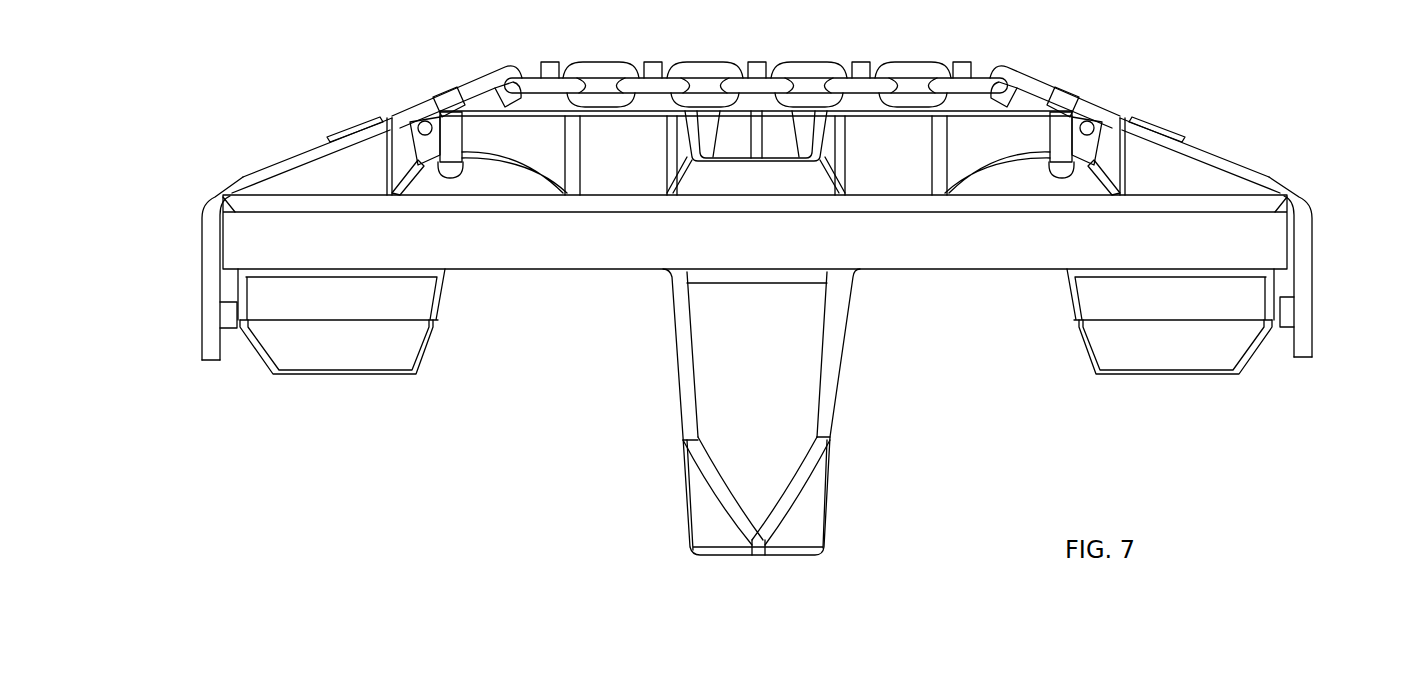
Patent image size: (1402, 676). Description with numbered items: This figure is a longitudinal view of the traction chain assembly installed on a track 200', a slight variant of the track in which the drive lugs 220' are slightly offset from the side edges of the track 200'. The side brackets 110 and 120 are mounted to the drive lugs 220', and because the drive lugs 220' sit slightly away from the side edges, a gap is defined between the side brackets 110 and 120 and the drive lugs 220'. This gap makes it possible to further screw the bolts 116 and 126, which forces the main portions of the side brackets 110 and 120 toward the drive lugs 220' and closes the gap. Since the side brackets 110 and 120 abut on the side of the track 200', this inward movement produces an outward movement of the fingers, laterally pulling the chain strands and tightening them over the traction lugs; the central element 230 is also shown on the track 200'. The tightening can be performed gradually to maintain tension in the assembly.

The track 200' is at (755, 339).
The side bracket 120 is at (208, 262).
The side bracket 110 is at (1308, 257).
The bolt 126 is at (233, 320).
The bolt 116 is at (1285, 313).
The drive lugs 220' is at (756, 345).
The center pocket 230 is at (777, 472).